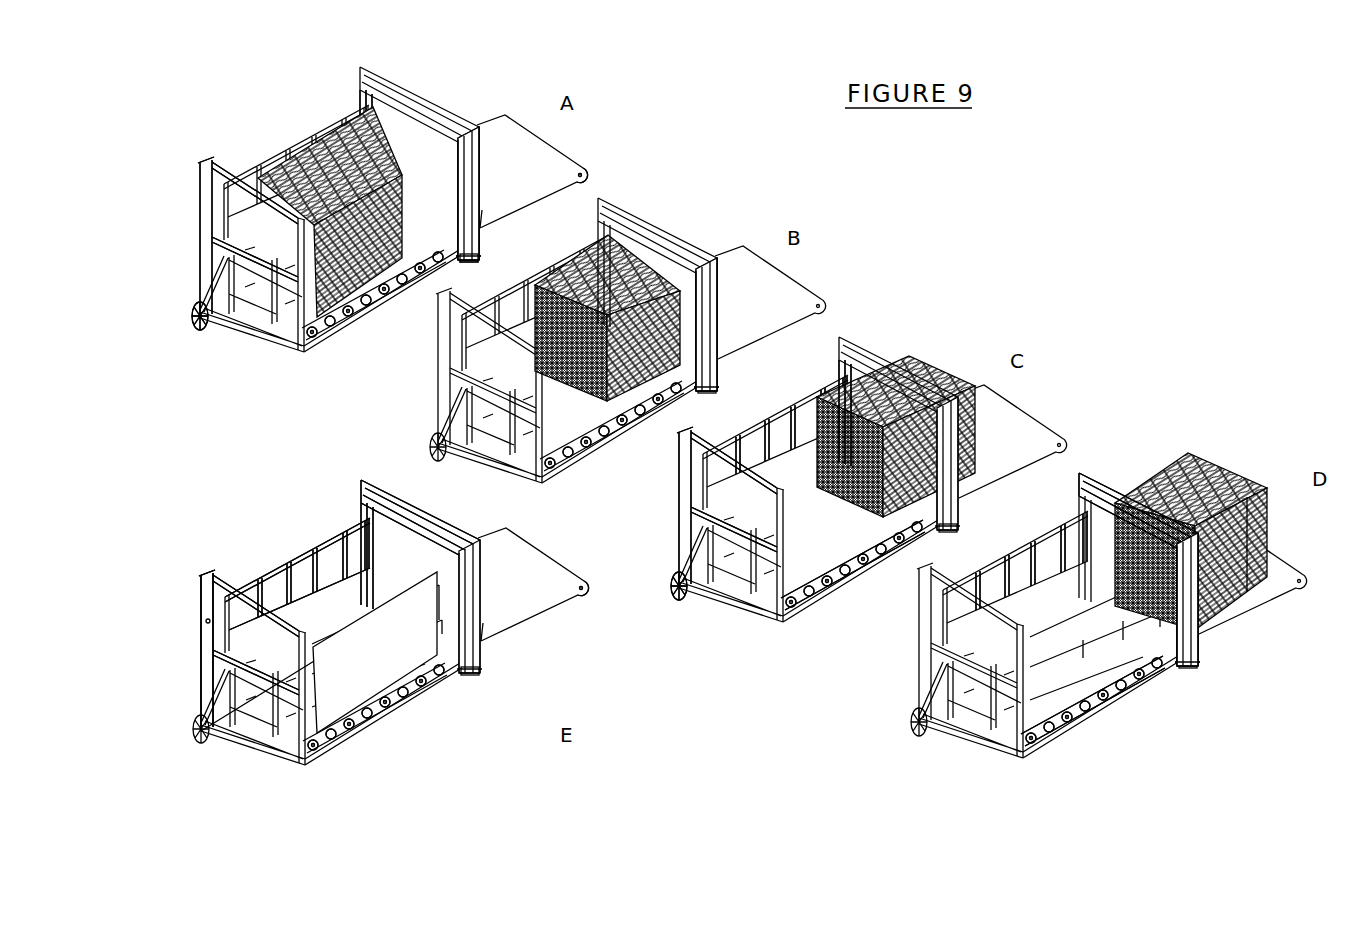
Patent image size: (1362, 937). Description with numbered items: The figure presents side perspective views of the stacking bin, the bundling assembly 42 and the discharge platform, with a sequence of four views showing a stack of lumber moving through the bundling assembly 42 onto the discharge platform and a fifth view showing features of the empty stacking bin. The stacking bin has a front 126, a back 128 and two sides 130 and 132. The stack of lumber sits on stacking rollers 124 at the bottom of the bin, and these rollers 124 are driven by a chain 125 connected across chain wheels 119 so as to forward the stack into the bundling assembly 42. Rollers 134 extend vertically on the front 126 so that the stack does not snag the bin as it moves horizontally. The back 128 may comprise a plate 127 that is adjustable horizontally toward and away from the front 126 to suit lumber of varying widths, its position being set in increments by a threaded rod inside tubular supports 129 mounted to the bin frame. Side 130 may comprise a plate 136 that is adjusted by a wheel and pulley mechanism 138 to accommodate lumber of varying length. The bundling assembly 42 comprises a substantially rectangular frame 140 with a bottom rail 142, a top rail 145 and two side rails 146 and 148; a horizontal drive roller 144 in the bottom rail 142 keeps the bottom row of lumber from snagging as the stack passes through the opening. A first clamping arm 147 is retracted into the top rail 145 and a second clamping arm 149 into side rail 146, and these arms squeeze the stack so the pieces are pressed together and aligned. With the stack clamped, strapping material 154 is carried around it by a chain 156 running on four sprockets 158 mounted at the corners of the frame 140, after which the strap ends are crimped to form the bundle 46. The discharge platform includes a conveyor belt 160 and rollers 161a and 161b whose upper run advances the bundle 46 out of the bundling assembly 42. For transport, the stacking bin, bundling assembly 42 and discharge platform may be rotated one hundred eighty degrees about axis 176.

The bundling assembly 42 is at (874, 352).
The bundle 46 is at (1238, 476).
The chain wheels 119 is at (840, 590).
The stacking rollers 124 is at (387, 303).
The chain 125 is at (875, 586).
The front 126 is at (287, 560).
The plate 127 is at (383, 661).
The back 128 is at (447, 580).
The tubular supports 129 is at (448, 664).
The side 130 is at (208, 622).
The side 132 is at (412, 561).
The rollers 134 is at (760, 430).
The plate 136 is at (272, 232).
The wheel and pulley mechanism 138 is at (197, 325).
The frame 140 is at (596, 222).
The bottom rail 142 is at (1140, 634).
The horizontal drive roller 144 is at (1178, 620).
The top rail 145 is at (425, 100).
The side rail 146 is at (470, 150).
The first clamping arm 147 is at (388, 86).
The side rail 148 is at (352, 511).
The second clamping arm 149 is at (468, 252).
The strapping material 154 is at (1133, 497).
The chain 156 is at (668, 250).
The sprockets 158 is at (710, 252).
The conveyor belt 160 is at (518, 172).
The roller 161a is at (480, 228).
The roller 161b is at (585, 165).
The axis 176 is at (215, 628).